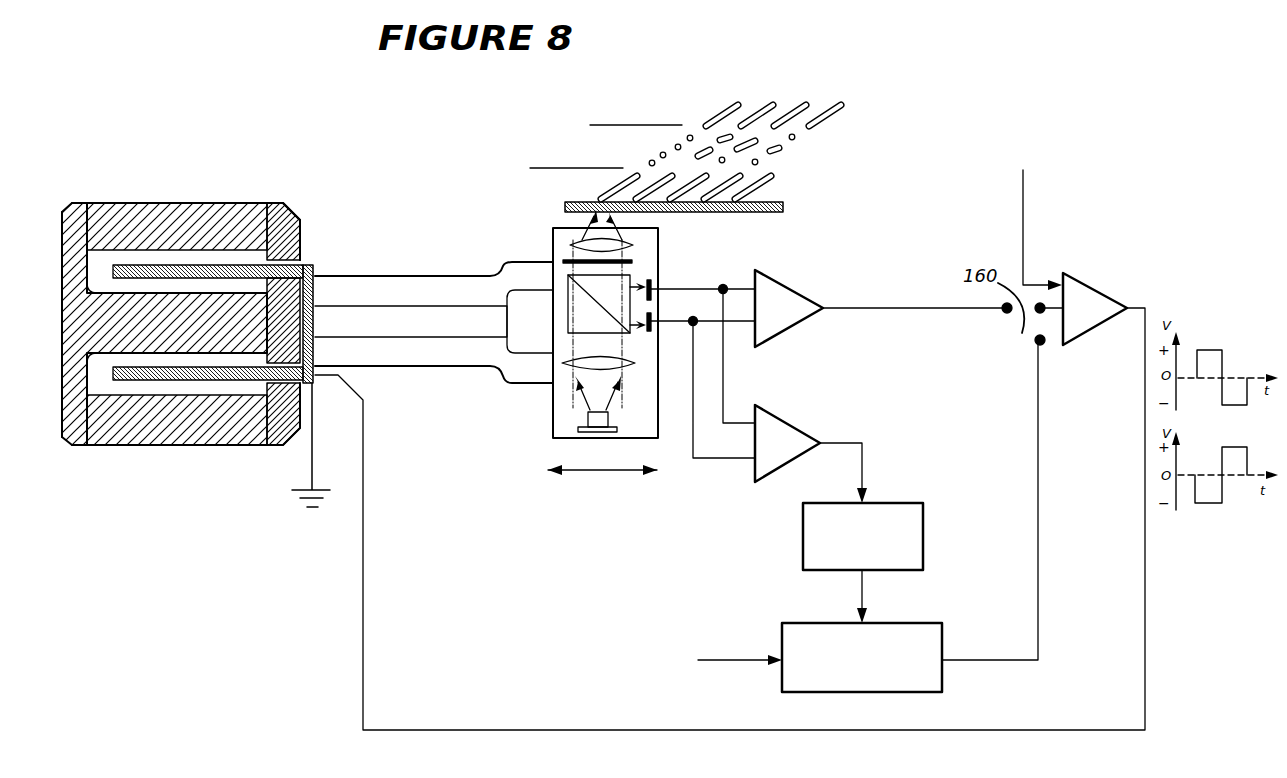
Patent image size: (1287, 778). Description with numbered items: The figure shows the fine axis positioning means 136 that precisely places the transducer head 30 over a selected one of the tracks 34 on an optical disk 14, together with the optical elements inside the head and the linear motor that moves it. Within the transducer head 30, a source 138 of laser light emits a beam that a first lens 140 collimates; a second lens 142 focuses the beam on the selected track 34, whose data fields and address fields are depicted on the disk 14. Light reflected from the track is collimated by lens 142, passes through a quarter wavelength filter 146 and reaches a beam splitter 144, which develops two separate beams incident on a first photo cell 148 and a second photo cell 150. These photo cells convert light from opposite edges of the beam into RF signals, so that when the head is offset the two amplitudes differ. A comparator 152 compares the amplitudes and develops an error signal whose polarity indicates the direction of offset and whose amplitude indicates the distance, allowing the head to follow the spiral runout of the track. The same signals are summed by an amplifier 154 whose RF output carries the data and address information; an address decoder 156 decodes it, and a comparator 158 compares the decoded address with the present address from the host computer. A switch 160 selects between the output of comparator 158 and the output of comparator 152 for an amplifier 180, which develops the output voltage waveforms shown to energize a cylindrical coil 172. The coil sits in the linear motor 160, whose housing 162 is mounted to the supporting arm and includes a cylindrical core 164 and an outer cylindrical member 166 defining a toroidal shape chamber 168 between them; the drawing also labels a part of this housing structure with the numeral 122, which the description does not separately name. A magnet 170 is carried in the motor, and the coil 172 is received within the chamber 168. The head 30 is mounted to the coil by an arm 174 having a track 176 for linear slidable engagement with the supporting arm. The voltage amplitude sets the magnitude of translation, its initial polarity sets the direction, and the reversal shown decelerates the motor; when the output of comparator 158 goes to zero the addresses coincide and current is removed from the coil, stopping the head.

The optical disk 14 is at (763, 197).
The transducer head 30 is at (552, 413).
The tracks 34 is at (730, 105).
The magnetic housing 122 is at (297, 212).
The fine axis positioning means 136 is at (988, 118).
The source of laser light 138 is at (608, 418).
The first lens 140 is at (632, 363).
The second lens 142 is at (630, 243).
The beam splitter 144 is at (562, 290).
The quarter wavelength filter 146 is at (632, 262).
The first photo cell 148 is at (655, 284).
The second photo cell 150 is at (653, 318).
The comparator 152 is at (772, 278).
The amplifier 154 is at (772, 412).
The address decoder 156 is at (880, 500).
The comparator 158 is at (890, 623).
The switch / linear motor 160 is at (72, 203).
The housing 162 is at (78, 447).
The cylindrical core 164 is at (193, 363).
The outer cylindrical member 166 is at (283, 203).
The toroidal shape chamber 168 is at (308, 263).
The magnet 170 is at (242, 447).
The cylindrical coil 172 is at (175, 266).
The arm 174 is at (462, 275).
The track 176 is at (413, 302).
The amplifier 180 is at (1095, 287).